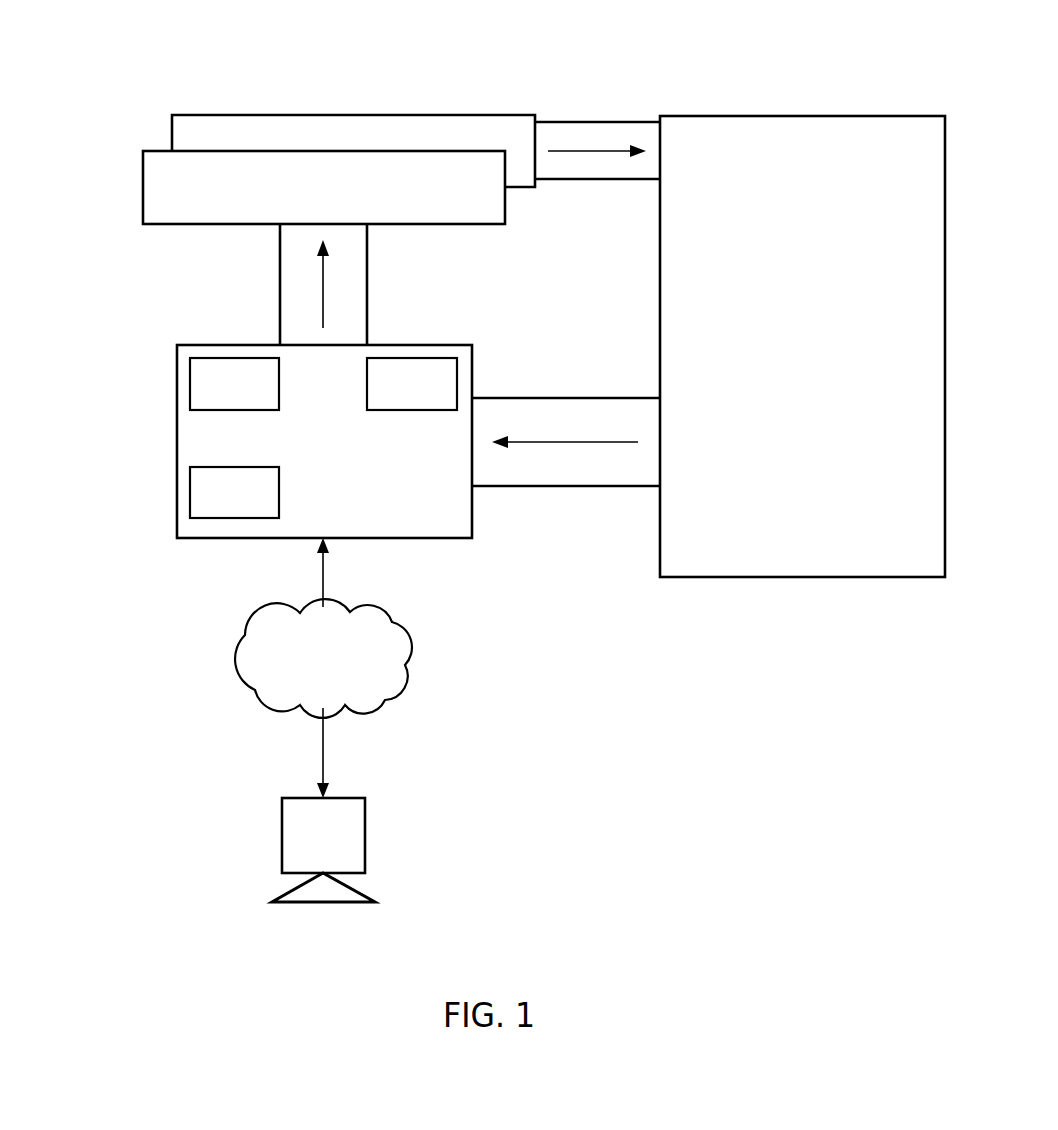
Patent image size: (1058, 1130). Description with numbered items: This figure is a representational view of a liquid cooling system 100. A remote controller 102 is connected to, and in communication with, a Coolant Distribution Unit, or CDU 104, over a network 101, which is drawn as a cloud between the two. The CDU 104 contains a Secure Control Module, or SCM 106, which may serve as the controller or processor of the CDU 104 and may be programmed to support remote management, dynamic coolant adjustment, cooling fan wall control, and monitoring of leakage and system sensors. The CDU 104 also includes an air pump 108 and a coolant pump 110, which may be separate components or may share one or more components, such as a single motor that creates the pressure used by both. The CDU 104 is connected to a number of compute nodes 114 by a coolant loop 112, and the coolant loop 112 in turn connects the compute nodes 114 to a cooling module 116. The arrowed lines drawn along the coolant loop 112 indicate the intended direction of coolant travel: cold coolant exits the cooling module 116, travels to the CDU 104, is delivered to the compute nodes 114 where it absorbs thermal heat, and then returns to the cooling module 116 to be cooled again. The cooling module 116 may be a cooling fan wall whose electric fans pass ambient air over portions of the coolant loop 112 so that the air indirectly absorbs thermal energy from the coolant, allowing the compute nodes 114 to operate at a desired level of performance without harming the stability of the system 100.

The system 100 is at (158, 58).
The network 101 is at (350, 667).
The remote controller 102 is at (236, 786).
The Coolant Distribution Unit (CDU) 104 is at (324, 443).
The Secure Control Module (SCM) 106 is at (237, 518).
The air pump 108 is at (228, 356).
The coolant pump 110 is at (419, 357).
The coolant loop 112 is at (368, 270).
The compute nodes 114 is at (364, 104).
The cooling module 116 is at (800, 116).